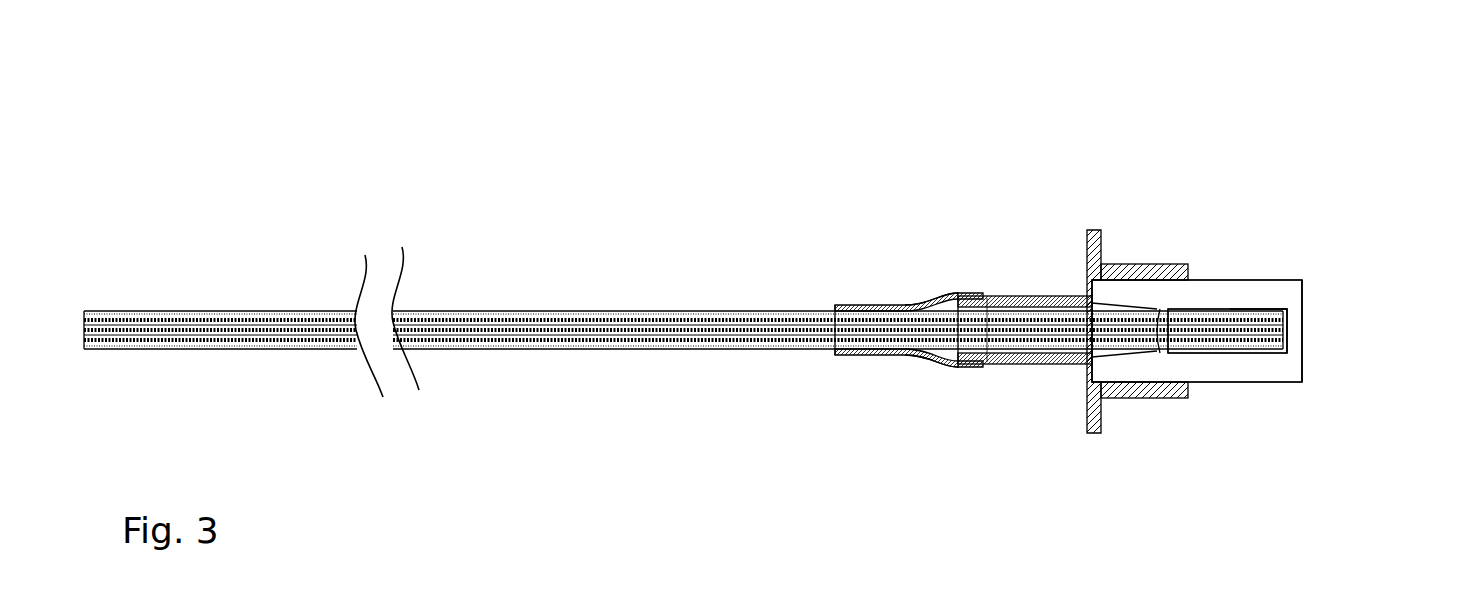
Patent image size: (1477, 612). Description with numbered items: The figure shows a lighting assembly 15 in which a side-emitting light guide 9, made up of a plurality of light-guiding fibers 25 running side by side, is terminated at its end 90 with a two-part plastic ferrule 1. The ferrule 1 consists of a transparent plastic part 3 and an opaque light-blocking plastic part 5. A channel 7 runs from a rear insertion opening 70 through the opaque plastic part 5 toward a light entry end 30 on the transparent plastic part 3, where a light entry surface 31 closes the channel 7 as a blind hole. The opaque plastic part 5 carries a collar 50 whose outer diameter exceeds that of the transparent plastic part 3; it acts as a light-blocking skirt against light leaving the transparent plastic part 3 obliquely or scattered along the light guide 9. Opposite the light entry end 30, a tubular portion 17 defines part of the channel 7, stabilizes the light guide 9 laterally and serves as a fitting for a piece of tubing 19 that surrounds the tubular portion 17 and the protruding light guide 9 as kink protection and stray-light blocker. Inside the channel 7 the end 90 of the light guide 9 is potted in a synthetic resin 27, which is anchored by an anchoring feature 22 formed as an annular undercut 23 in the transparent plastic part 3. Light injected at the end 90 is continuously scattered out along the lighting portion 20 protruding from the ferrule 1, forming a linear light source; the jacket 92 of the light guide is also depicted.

The ferrule 1 is at (1213, 418).
The transparent plastic part 3 is at (1253, 278).
The opaque plastic part 5 is at (1162, 263).
The channel 7 is at (1080, 354).
The light guide 9 is at (720, 298).
The lighting assembly 15 is at (298, 97).
The tubular portion 17 is at (990, 294).
The piece of tubing 19 is at (873, 305).
The lighting portion 20 is at (612, 378).
The anchoring feature 22 is at (1177, 345).
The annular undercut 23 is at (1177, 345).
The light-guiding fibers 25 is at (1058, 326).
The synthetic resin 27 is at (1177, 347).
The light entry end 30 is at (1320, 327).
The light entry surface 31 is at (1305, 305).
The collar 50 is at (1093, 228).
The rear insertion opening 70 is at (952, 293).
The end of light guide 90 is at (1275, 308).
The cable jacket 92 is at (553, 310).